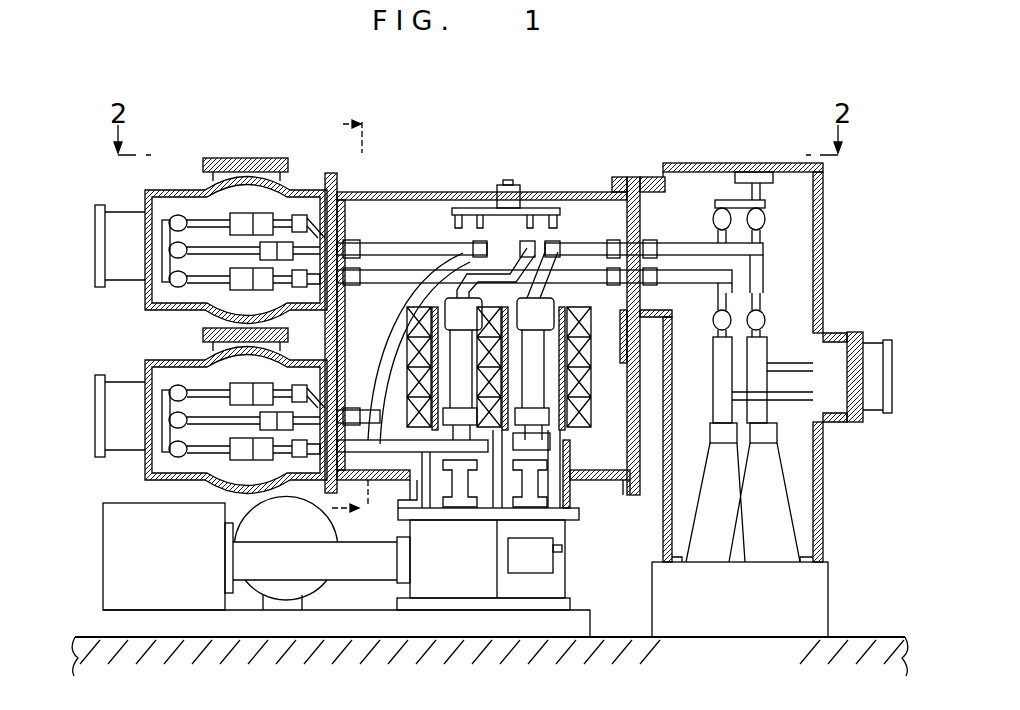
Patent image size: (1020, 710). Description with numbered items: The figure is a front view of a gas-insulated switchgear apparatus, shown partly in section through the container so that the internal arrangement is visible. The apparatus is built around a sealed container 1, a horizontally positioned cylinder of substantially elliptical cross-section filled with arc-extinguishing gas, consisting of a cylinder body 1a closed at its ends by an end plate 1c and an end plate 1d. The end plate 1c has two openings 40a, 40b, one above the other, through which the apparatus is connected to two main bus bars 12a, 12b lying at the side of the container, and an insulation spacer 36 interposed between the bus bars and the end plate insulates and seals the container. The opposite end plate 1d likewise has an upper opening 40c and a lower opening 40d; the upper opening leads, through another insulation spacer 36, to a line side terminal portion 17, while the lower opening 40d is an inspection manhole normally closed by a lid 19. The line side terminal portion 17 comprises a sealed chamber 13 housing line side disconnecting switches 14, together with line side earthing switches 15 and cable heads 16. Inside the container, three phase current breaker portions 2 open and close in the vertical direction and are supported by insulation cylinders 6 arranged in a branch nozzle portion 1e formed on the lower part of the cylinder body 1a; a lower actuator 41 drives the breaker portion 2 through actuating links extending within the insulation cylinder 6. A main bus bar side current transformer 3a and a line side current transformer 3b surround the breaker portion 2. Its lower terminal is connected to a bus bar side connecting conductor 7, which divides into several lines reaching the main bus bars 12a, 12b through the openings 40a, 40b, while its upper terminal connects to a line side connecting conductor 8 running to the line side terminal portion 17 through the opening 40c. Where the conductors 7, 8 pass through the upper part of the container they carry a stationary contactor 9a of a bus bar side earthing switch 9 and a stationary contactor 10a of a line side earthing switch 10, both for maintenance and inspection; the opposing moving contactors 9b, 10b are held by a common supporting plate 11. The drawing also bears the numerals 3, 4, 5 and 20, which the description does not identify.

The sealed container 1 is at (604, 192).
The cylinder body 1a is at (474, 195).
The end plate 1c is at (340, 192).
The end plate 1d is at (634, 180).
The branch nozzle portion 1e is at (394, 513).
The breaker portion 2 is at (600, 400).
The section line 3- 3 is at (350, 320).
The main bus bar side current transformer 3a is at (545, 390).
The line side current transformer 3b is at (600, 343).
The lower wall member 4 is at (612, 448).
The base plate 5 is at (560, 470).
The insulation cylinder 6 is at (533, 487).
The bus bar side connecting conductor 7 is at (373, 488).
The line side connecting conductor 8 is at (609, 192).
The bus bar side earthing switch 9 is at (432, 234).
The stationary contactor 9a is at (440, 242).
The moving contactor 9b is at (450, 212).
The line side earthing switch 10 is at (506, 228).
The stationary contactor 10a is at (552, 270).
The moving contactor 10b is at (552, 255).
The common supporting plate 11 is at (510, 183).
The main bus bar 12a is at (178, 190).
The main bus bar 12b is at (160, 360).
The sealed chamber 13 is at (823, 197).
The line side disconnecting switch 14 is at (762, 300).
The line side earthing switch 15 is at (830, 375).
The cable head 16 is at (780, 458).
The line side terminal portion 17 is at (823, 228).
The lid 19 is at (643, 480).
The electrode coil 20 is at (585, 367).
The insulation spacer 36 is at (325, 178).
The opening 40a is at (358, 200).
The opening 40b is at (312, 470).
The opening 40c is at (620, 227).
The opening 40d is at (745, 480).
The lower actuator 41 is at (462, 567).